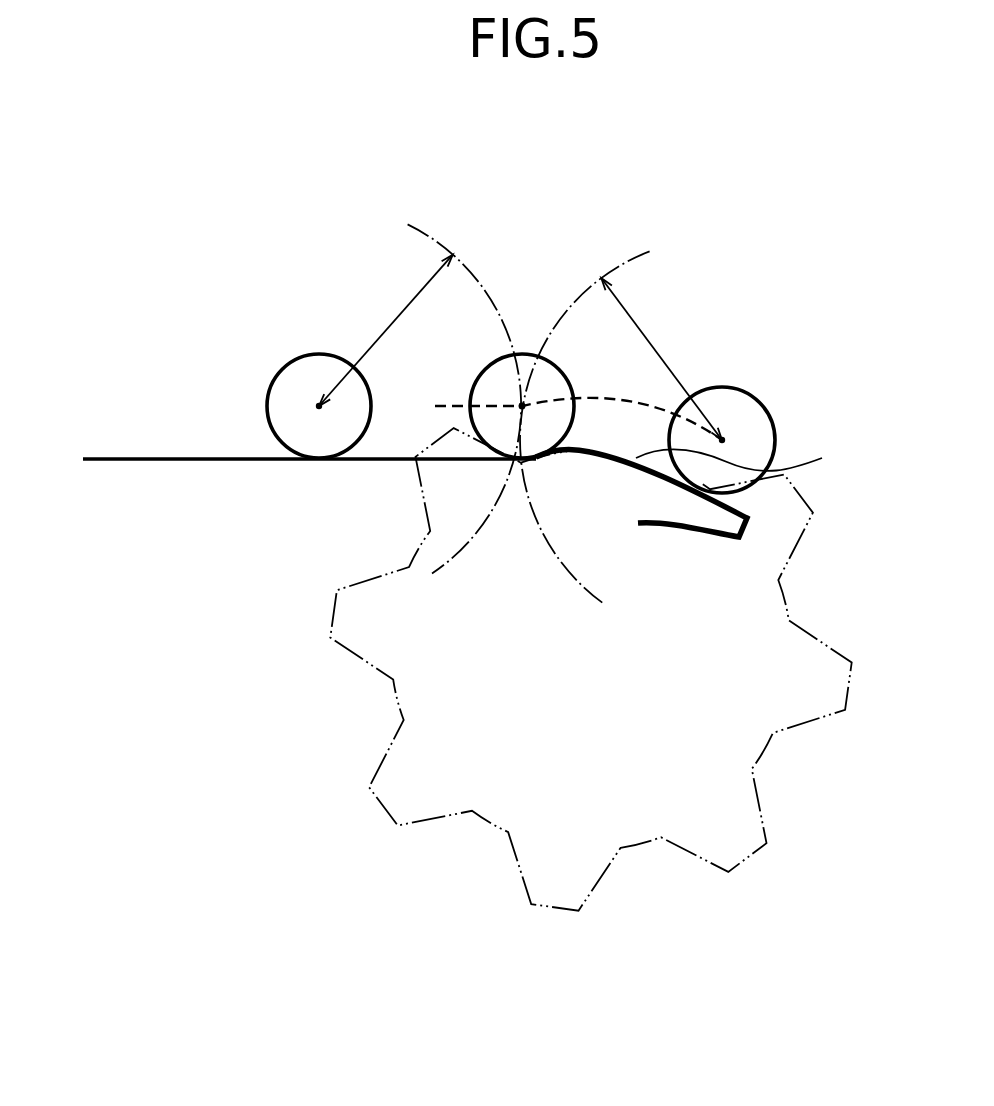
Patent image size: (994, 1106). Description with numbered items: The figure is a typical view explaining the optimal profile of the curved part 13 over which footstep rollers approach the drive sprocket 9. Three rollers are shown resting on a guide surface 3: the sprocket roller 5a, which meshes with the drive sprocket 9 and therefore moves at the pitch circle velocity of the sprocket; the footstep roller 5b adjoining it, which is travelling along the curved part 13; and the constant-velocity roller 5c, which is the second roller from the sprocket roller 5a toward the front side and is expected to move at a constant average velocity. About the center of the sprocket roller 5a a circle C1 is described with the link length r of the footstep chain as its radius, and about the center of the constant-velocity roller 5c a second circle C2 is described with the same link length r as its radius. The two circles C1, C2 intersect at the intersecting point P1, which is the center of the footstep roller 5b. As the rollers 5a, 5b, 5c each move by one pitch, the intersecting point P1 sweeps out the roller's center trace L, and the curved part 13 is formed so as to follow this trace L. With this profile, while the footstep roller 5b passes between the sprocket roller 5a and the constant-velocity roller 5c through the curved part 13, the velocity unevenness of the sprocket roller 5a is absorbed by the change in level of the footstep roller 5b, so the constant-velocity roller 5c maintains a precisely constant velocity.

The guide rail / flat surface 3 is at (131, 458).
The sprocket roller 5a is at (742, 392).
The footstep roller 5b is at (522, 353).
The constant-velocity roller 5c is at (312, 356).
The drive sprocket 9 is at (788, 572).
The curved part 13 is at (702, 487).
The circle C1 is at (652, 252).
The circle C2 is at (430, 238).
The link length r is at (520, 347).
The roller's center trace L is at (450, 404).
The intersecting point P1 is at (523, 405).